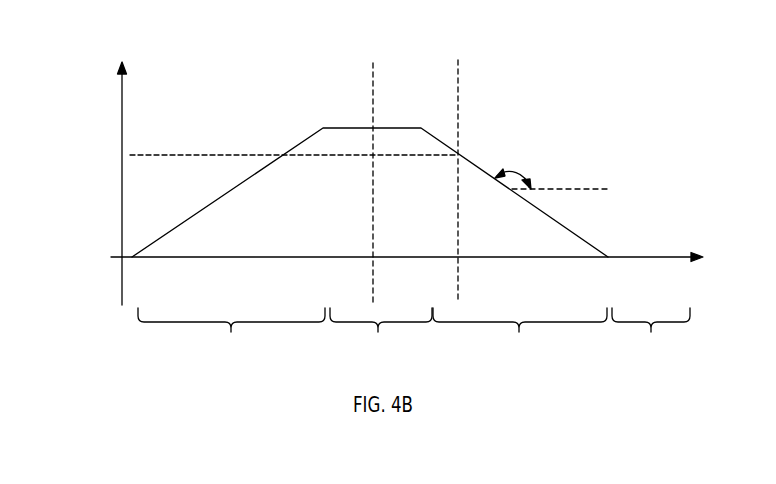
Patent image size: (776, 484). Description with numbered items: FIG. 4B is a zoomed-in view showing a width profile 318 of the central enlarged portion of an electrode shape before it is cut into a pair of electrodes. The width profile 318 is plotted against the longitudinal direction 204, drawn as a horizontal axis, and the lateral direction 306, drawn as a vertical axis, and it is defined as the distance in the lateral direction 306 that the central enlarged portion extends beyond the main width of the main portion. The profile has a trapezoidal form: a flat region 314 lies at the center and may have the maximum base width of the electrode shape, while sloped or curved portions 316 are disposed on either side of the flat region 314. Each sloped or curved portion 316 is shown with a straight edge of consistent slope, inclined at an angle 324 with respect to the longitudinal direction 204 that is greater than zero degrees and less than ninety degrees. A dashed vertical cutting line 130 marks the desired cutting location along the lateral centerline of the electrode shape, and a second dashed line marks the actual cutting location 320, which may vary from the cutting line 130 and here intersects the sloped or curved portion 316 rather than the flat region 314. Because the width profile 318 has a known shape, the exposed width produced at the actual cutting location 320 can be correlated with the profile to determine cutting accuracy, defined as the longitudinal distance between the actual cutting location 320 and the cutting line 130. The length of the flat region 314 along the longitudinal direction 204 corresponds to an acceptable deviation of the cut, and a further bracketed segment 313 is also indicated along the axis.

The lateral direction 306 is at (119, 166).
The longitudinal direction 204 is at (424, 259).
The width profile 318 is at (256, 115).
The cutting line 130 is at (365, 171).
The actual cutting location 320 is at (459, 168).
The angle 324 is at (513, 169).
The sloped or curved portion 316 is at (372, 338).
The flat region 314 is at (381, 338).
The trailing portion 313 is at (651, 337).